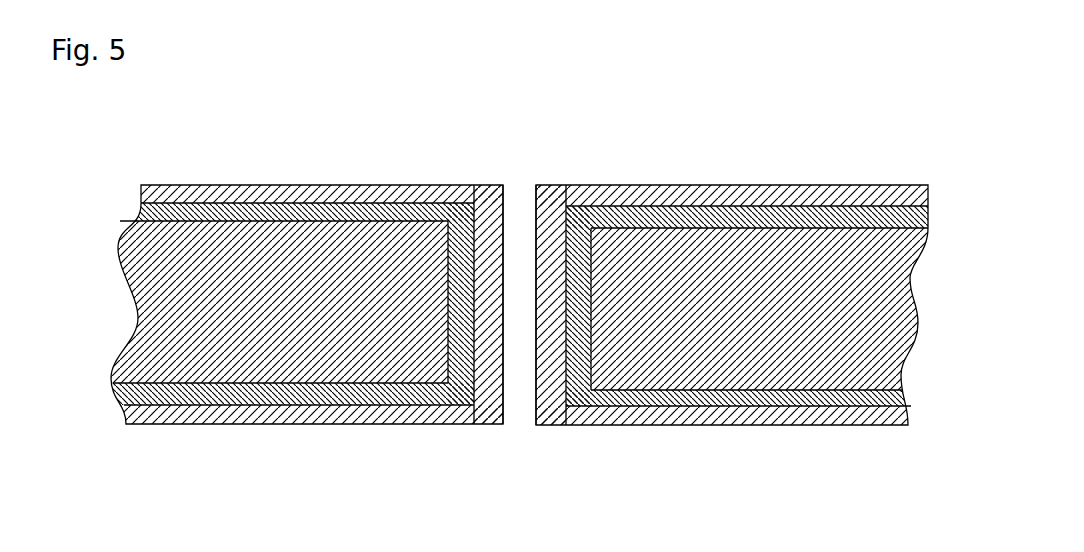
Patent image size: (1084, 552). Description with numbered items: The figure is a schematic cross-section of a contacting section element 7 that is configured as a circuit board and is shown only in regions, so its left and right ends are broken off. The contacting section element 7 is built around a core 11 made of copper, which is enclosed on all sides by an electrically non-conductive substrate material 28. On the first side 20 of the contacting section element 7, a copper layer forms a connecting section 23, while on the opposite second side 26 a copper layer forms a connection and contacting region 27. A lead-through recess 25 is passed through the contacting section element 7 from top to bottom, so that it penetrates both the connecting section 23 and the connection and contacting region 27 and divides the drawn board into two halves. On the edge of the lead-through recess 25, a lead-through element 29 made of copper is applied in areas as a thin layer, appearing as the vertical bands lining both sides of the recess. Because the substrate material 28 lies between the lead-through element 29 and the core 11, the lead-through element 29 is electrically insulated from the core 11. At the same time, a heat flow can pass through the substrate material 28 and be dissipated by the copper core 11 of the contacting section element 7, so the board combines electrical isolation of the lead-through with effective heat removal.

The contacting section element 7 is at (890, 150).
The core 11 is at (197, 363).
The first side 20 is at (313, 177).
The connecting section 23 is at (710, 177).
The lead-through recess 25 is at (506, 197).
The second side 26 is at (338, 416).
The connection and contacting region 27 is at (745, 417).
The substrate material 28 is at (256, 205).
The lead-through element 29 is at (474, 398).